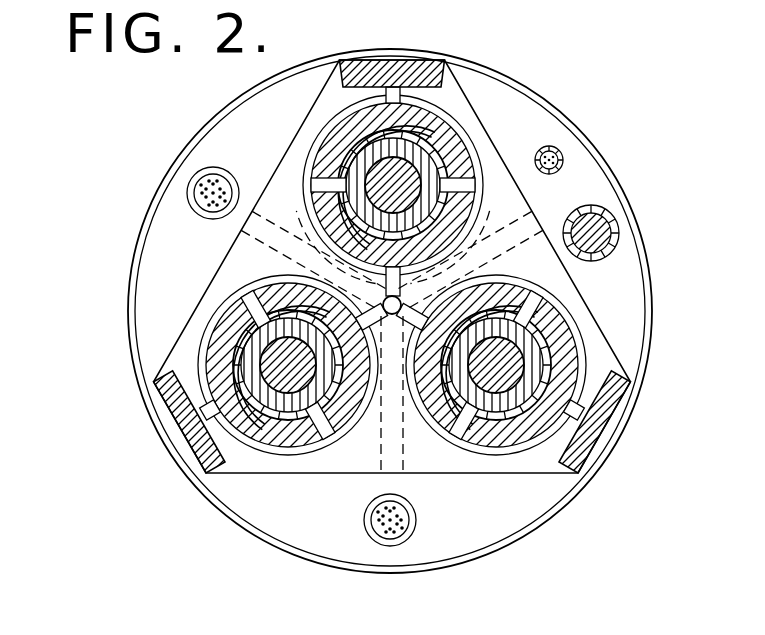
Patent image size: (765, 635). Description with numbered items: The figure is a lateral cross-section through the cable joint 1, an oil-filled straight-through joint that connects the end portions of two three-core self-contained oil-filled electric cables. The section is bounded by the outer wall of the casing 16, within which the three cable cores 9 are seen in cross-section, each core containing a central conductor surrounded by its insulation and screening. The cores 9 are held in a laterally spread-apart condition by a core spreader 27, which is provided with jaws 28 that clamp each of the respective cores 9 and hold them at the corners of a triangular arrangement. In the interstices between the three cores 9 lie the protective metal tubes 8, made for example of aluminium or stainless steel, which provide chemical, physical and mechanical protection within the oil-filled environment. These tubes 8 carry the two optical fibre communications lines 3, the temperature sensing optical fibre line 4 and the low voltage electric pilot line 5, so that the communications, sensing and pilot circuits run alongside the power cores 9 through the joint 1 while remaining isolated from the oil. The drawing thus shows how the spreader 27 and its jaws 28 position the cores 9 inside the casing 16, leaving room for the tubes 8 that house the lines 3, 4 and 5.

The cable joint 1 is at (192, 506).
The optical fibre communications lines 3 is at (210, 190).
The temperature sensing optical fibre line 4 is at (561, 152).
The electric pilot line 5 is at (605, 248).
The protective metal tubes 8 is at (190, 203).
The cable cores 9 is at (527, 356).
The casing 16 is at (277, 77).
The core spreader 27 is at (338, 455).
The jaws 28 is at (273, 447).